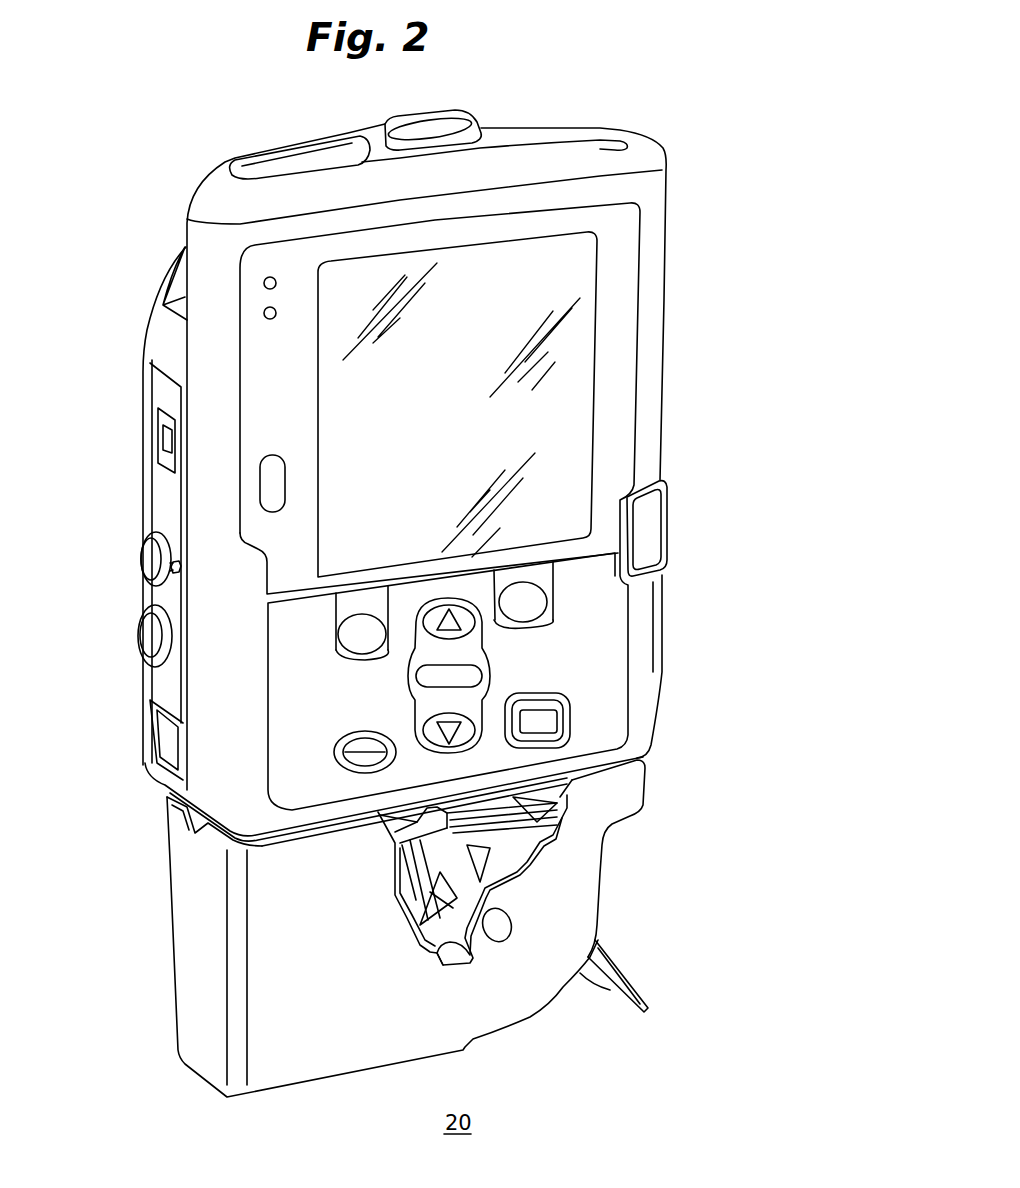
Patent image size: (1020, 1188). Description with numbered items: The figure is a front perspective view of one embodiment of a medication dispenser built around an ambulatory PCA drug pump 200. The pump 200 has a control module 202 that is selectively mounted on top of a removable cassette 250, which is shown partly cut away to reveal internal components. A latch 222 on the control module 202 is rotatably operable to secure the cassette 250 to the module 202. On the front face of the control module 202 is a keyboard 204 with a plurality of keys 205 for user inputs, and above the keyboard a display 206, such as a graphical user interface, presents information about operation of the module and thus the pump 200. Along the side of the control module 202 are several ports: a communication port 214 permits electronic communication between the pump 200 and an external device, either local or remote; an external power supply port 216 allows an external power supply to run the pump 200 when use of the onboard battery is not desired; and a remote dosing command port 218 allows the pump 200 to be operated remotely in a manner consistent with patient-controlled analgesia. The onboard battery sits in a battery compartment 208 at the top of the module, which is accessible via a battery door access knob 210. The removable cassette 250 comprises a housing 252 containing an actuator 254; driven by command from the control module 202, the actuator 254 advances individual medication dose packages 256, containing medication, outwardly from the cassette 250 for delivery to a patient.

The ambulatory PCA drug pump 200 is at (170, 176).
The control module 202 is at (663, 340).
The keyboard 204 is at (567, 657).
The keys 205 is at (552, 720).
The display 206 is at (575, 410).
The battery compartment 208 is at (298, 170).
The battery door access knob 210 is at (398, 118).
The communication port 214 is at (157, 437).
The external power supply port 216 is at (145, 635).
The remote dosing command port 218 is at (145, 559).
The latch 222 is at (648, 543).
The removable cassette 250 is at (138, 1026).
The housing 252 is at (187, 927).
The actuator 254 is at (388, 958).
The medication dose packages 256 is at (612, 962).